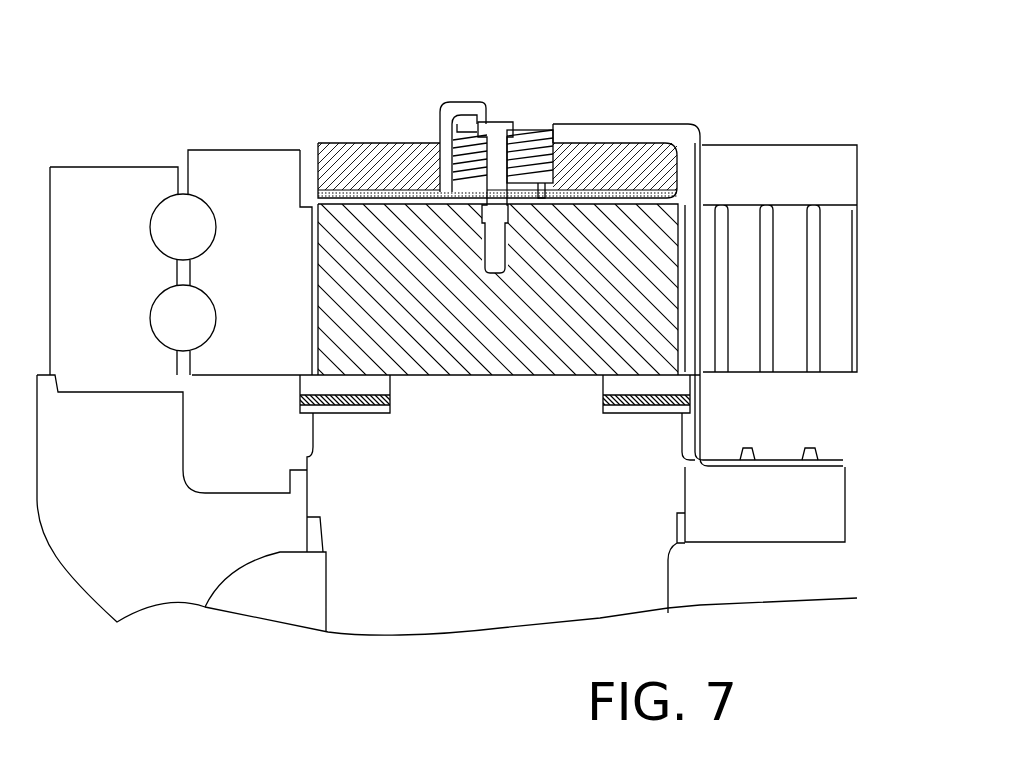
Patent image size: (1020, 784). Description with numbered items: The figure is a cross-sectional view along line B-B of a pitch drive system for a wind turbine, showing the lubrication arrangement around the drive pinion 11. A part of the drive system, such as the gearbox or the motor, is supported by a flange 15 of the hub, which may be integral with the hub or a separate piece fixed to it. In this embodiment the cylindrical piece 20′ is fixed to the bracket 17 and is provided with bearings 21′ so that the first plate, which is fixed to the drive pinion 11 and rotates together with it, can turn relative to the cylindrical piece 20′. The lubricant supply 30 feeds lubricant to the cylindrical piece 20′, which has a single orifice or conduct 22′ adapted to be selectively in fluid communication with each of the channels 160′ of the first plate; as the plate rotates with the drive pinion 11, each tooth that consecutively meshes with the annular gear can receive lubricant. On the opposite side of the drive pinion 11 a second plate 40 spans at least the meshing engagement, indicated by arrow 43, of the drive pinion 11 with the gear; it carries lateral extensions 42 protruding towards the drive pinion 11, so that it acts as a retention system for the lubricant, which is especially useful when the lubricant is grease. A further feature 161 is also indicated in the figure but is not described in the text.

The drive pinion 11 is at (633, 273).
The flange 15 is at (748, 530).
The bracket 17 is at (701, 139).
The cylindrical piece 20′ is at (513, 133).
The bearings 21′ is at (563, 143).
The orifice or conduct 22′ is at (452, 152).
The lubricant supply 30 is at (473, 107).
The second plate 40 is at (343, 400).
The lateral extensions 42 is at (300, 390).
The arrow 43 is at (308, 230).
The channels 160′ is at (328, 207).
The groove 161 is at (449, 190).